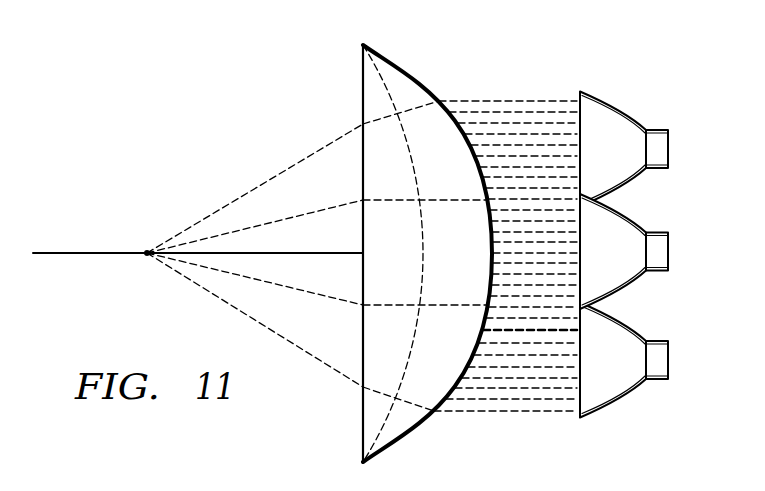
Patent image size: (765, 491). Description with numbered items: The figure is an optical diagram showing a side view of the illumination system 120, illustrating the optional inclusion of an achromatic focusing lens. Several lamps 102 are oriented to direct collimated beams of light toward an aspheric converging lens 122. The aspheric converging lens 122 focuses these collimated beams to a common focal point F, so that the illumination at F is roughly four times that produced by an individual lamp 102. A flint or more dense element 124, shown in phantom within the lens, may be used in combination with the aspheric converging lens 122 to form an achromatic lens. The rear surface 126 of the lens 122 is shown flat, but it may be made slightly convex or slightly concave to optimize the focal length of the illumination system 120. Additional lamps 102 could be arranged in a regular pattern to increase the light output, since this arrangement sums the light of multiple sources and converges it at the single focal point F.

The lamp 102 is at (623, 103).
The illumination system 120 is at (236, 137).
The aspheric converging lens 122 is at (393, 67).
The flint or more dense element 124 is at (375, 77).
The rear surface 126 is at (361, 425).